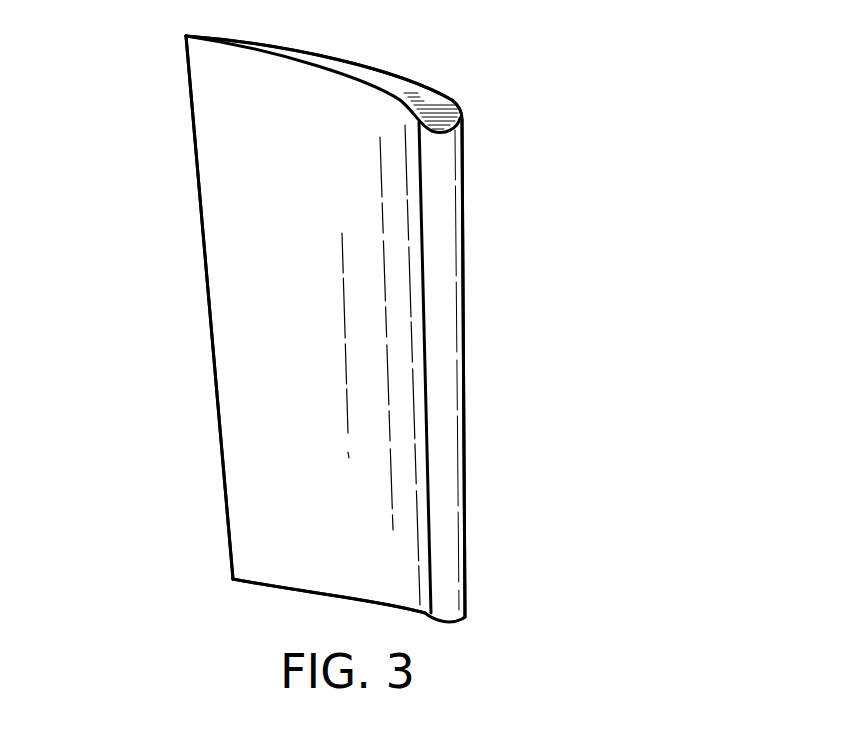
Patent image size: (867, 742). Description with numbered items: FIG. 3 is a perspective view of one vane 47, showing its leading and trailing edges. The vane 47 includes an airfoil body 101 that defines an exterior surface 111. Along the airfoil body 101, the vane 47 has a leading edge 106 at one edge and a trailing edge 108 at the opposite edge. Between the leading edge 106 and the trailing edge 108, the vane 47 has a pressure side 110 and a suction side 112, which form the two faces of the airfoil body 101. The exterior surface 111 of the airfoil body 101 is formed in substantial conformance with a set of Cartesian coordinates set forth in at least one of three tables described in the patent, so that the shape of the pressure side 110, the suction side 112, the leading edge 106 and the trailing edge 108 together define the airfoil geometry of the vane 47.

The vane 47 is at (380, 329).
The pressure side 110 is at (258, 210).
The trailing edge 108 is at (212, 350).
The suction side 112 is at (463, 167).
The leading edge 106 is at (447, 400).
The exterior surface 111 is at (288, 407).
The airfoil body 101 is at (288, 482).